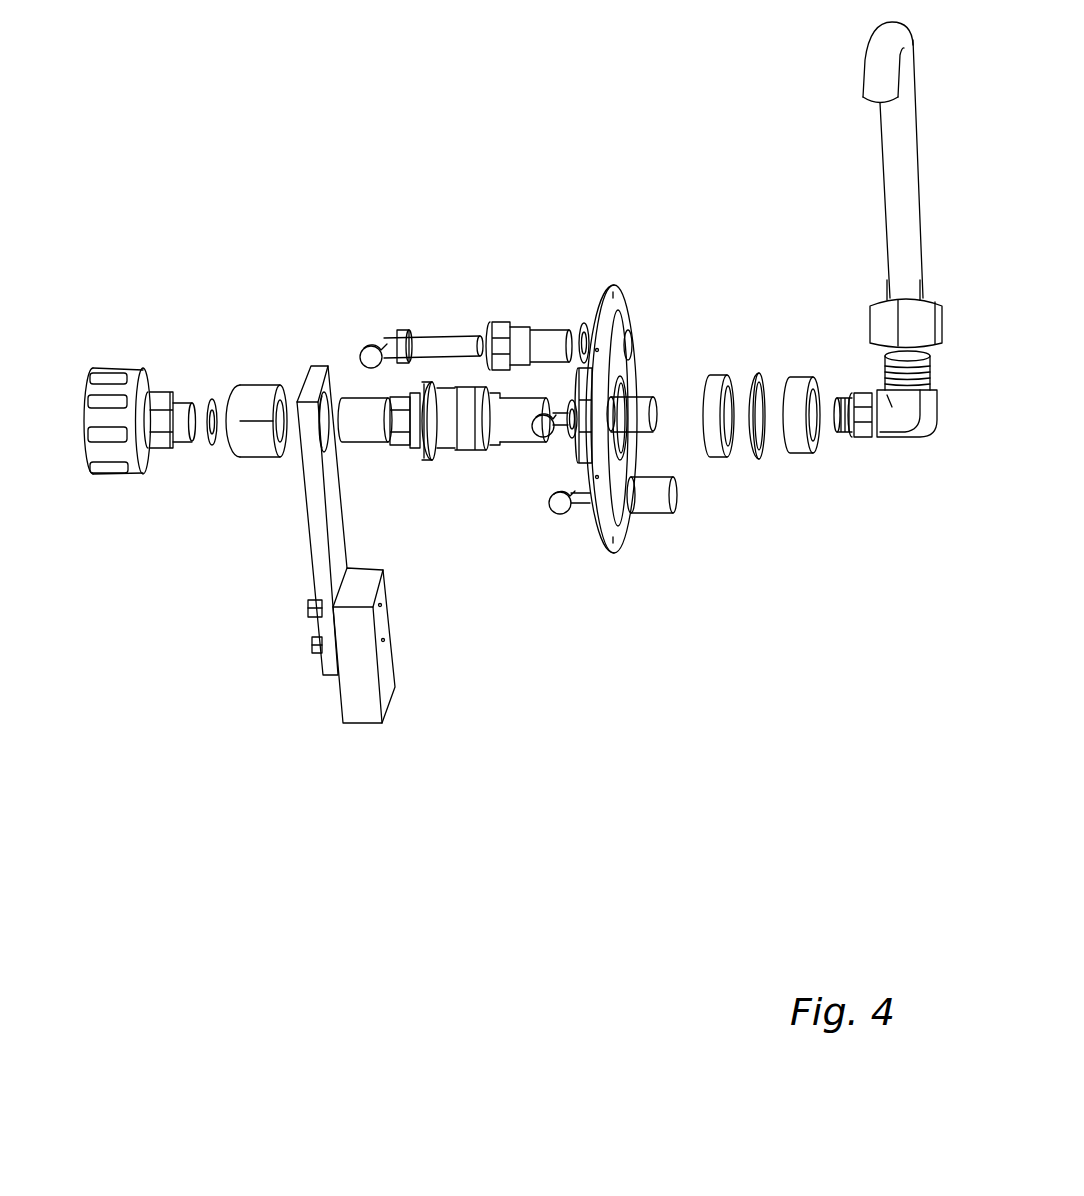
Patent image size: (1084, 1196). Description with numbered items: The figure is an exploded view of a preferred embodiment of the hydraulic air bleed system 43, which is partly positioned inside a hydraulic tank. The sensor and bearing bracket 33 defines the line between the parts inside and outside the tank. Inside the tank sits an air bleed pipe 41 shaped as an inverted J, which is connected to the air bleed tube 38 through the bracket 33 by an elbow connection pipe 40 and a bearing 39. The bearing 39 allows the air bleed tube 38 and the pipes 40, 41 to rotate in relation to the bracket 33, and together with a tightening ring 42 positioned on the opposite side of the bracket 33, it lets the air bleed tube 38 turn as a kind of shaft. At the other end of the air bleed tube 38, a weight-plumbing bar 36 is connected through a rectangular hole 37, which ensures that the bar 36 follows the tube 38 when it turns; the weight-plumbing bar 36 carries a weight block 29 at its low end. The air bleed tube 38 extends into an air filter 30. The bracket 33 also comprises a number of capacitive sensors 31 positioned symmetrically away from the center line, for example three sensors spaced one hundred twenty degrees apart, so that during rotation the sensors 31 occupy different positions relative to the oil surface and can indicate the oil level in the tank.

The weight block 29 is at (360, 725).
The air filter 30 is at (118, 477).
The capacitive sensors 31 is at (388, 335).
The sensor and bearing bracket 33 is at (605, 285).
The weight-plumbing bar 36 is at (308, 542).
The rectangular hole 37 is at (333, 393).
The air bleed tube 38 is at (465, 422).
The bearing 39 is at (722, 457).
The elbow connection pipe 40 is at (908, 438).
The air bleed pipe 41 is at (862, 100).
The tightening ring 42 is at (432, 383).
The hydraulic air bleed system 43 is at (592, 735).